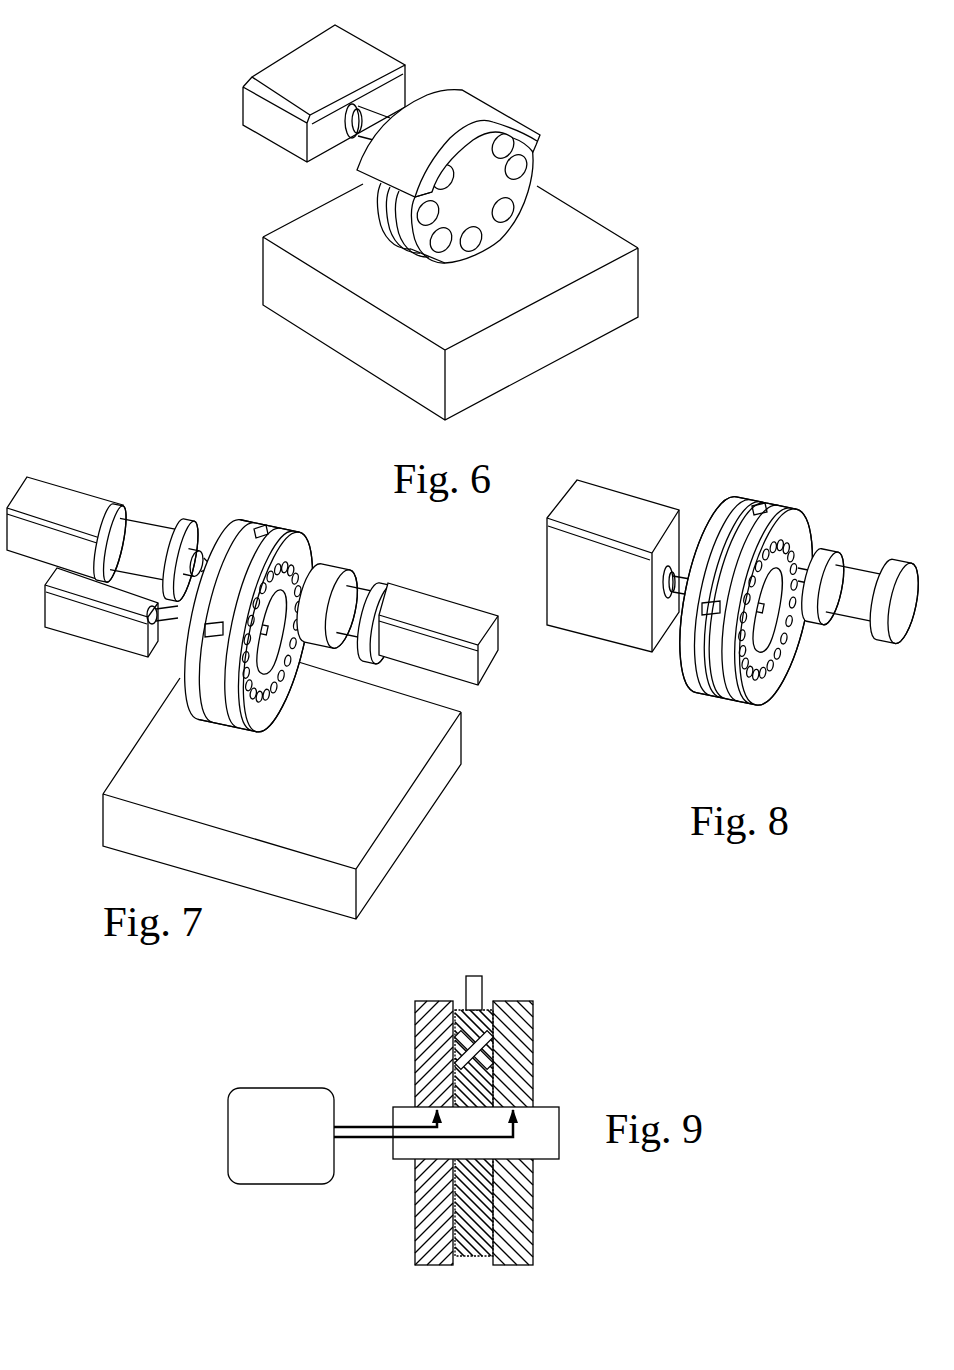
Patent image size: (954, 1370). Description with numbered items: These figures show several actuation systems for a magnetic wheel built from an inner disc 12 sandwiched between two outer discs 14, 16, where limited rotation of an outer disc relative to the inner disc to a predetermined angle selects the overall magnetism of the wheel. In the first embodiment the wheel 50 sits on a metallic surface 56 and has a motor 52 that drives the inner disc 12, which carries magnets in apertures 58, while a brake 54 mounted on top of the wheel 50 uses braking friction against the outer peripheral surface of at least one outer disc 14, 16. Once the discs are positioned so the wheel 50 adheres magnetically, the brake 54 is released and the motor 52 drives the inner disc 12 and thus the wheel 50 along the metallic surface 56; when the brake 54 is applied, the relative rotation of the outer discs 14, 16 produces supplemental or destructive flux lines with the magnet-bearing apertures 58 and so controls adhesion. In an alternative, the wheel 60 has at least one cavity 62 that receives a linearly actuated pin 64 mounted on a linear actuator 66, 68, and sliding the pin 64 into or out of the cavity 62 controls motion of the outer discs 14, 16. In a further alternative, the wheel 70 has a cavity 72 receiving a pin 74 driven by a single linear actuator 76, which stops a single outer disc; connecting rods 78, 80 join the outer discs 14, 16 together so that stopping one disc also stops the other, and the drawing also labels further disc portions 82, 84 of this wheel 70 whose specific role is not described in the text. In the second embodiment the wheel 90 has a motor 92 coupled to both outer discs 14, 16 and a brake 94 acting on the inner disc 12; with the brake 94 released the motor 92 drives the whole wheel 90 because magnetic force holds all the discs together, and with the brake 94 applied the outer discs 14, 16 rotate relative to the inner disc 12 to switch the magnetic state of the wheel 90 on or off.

In FIG. 9, the inner disc 12 is at (478, 1256).
In FIG. 9, the outer disc 14 is at (435, 1265).
In FIG. 9, the outer disc 16 is at (515, 1265).
In FIG. 6, the wheel 50 is at (541, 166).
In FIG. 6, the motor 52 is at (392, 53).
In FIG. 7, the motor 52 is at (101, 649).
In FIG. 8, the motor 52 is at (629, 506).
In FIG. 6, the brake 54 is at (497, 103).
In FIG. 6, the metallic surface 56 is at (598, 250).
In FIG. 7, the metallic surface 56 is at (415, 821).
In FIG. 6, the apertures 58 is at (478, 240).
In FIG. 7, the wheel 60 is at (316, 622).
In FIG. 7, the cavity 62 is at (285, 678).
In FIG. 7, the linearly actuated pin 64 is at (310, 548).
In FIG. 7, the linear actuator 66 is at (444, 607).
In FIG. 7, the linear actuator 68 is at (55, 480).
In FIG. 8, the wheel 70 is at (775, 590).
In FIG. 8, the cavity 72 is at (781, 639).
In FIG. 8, the linearly actuated pin 74 is at (815, 547).
In FIG. 8, the linear actuator 76 is at (875, 560).
In FIG. 8, the connecting rod 78 is at (767, 507).
In FIG. 8, the connecting rod 80 is at (701, 618).
In FIG. 8, the middle plate 82 is at (690, 697).
In FIG. 8, the front plate 84 is at (747, 695).
In FIG. 9, the wheel 90 is at (564, 977).
In FIG. 9, the motor 92 is at (279, 1088).
In FIG. 9, the brake 94 is at (476, 976).